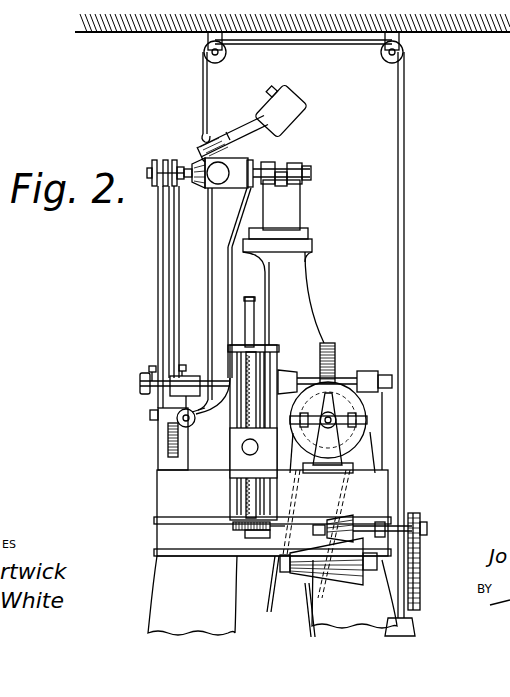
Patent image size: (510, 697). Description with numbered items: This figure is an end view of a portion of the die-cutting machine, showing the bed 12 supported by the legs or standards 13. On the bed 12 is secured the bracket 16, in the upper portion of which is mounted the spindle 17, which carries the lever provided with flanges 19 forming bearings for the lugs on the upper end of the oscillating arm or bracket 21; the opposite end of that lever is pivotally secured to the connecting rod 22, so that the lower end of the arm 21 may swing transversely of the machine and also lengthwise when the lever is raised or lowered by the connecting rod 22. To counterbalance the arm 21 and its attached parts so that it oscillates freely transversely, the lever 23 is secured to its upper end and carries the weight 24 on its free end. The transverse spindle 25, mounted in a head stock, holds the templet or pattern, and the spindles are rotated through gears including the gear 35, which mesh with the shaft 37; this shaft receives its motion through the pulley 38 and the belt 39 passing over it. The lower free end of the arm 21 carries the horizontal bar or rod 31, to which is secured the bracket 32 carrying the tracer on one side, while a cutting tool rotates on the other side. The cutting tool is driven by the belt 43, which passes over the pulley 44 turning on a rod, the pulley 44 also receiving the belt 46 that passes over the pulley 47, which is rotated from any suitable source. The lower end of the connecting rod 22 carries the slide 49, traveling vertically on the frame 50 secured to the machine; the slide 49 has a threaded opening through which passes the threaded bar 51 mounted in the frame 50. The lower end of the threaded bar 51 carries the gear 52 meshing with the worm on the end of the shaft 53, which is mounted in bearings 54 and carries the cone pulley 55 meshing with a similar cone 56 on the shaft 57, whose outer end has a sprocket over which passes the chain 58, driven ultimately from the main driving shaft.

The bed 12 is at (156, 484).
The legs or standards 13 is at (184, 600).
The bracket 16 is at (304, 264).
The spindle 17 is at (300, 183).
The flanges 19 is at (226, 132).
The oscillating arm or bracket 21 is at (209, 262).
The connecting rod 22 is at (226, 306).
The lever 23 is at (258, 128).
The weight 24 is at (304, 107).
The transverse spindle 25 is at (341, 378).
The horizontal bar or rod 31 is at (192, 426).
The bracket 32 is at (170, 390).
The gear 35 is at (329, 345).
The shaft 37 is at (336, 430).
The pulley 38 is at (368, 418).
The belt 39 is at (270, 610).
The belt 43 is at (157, 242).
The pulley 44 is at (185, 168).
The belt 46 is at (172, 288).
The pulley 47 is at (157, 440).
The slide 49 is at (234, 464).
The frame 50 is at (263, 373).
The threaded bar 51 is at (254, 365).
The gear 52 is at (256, 542).
The shaft 53 is at (236, 560).
The bearings 54 is at (284, 573).
The cone pulley 55 is at (326, 561).
The cone 56 is at (345, 522).
The shaft 57 is at (407, 522).
The chain 58 is at (420, 538).